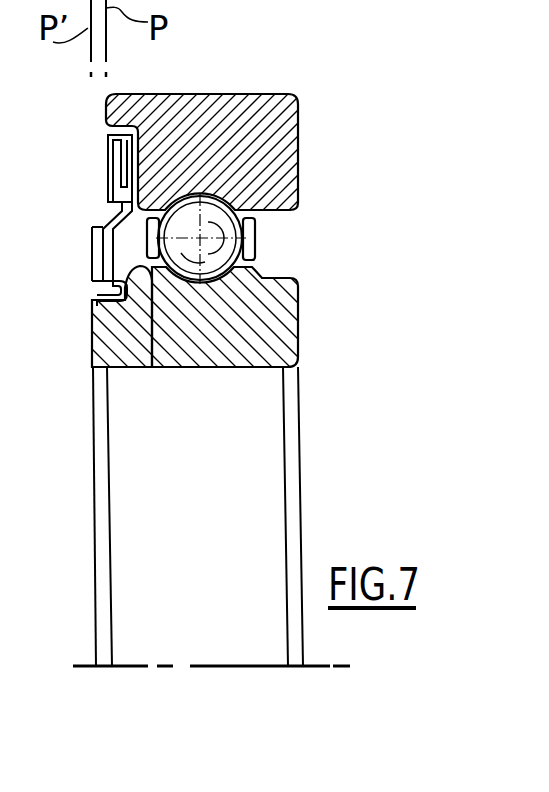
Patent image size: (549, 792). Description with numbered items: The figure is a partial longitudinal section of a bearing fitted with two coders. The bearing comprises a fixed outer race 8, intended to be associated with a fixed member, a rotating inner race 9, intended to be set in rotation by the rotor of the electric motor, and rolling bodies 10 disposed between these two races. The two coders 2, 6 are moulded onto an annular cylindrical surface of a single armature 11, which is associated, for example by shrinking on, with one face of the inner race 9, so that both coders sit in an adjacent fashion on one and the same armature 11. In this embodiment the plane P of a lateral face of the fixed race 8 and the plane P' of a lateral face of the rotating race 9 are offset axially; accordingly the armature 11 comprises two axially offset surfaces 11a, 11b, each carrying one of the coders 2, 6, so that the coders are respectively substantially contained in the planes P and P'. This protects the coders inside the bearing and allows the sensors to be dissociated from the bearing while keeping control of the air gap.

The coder 2 is at (92, 253).
The coder 6 is at (115, 162).
The fixed outer race 8 is at (270, 128).
The rotating inner race 9 is at (272, 330).
The rolling bodies 10 is at (207, 240).
The armature 11 is at (105, 316).
The axially offset surface 11a is at (152, 366).
The axially offset surface 11b is at (130, 180).